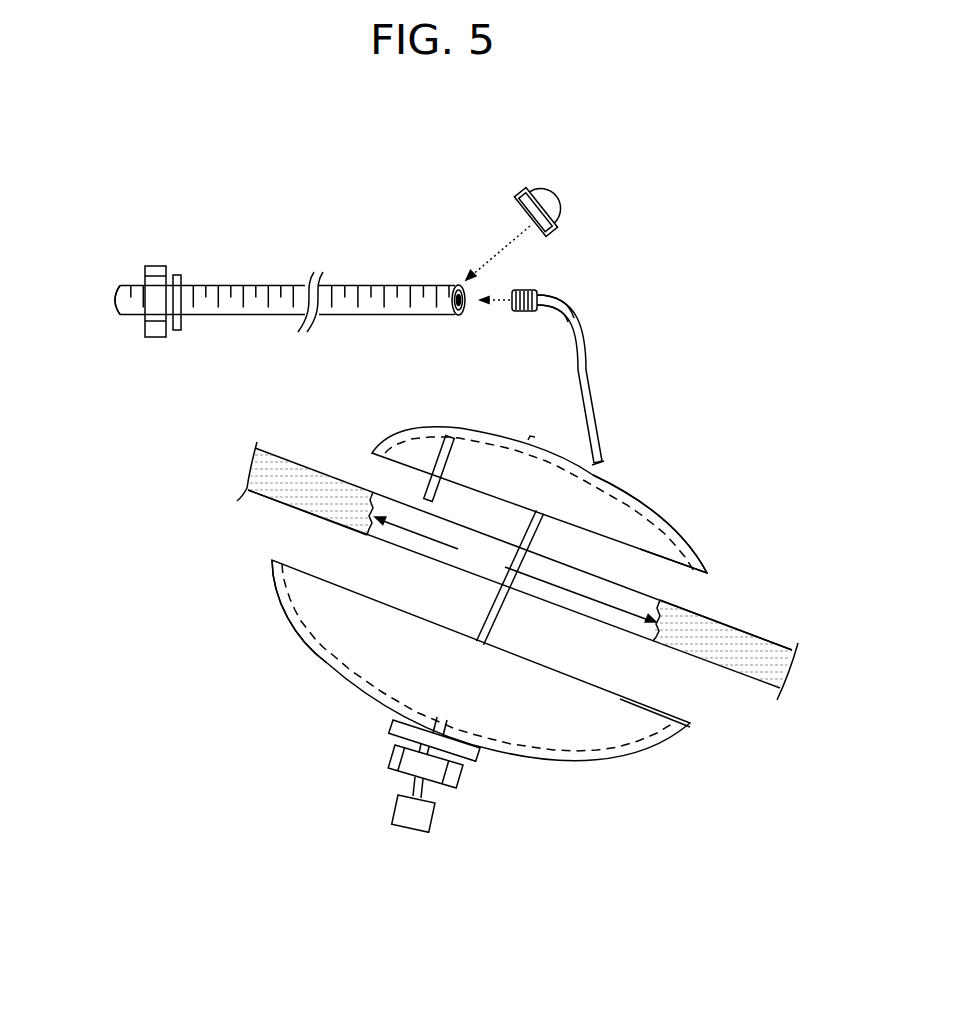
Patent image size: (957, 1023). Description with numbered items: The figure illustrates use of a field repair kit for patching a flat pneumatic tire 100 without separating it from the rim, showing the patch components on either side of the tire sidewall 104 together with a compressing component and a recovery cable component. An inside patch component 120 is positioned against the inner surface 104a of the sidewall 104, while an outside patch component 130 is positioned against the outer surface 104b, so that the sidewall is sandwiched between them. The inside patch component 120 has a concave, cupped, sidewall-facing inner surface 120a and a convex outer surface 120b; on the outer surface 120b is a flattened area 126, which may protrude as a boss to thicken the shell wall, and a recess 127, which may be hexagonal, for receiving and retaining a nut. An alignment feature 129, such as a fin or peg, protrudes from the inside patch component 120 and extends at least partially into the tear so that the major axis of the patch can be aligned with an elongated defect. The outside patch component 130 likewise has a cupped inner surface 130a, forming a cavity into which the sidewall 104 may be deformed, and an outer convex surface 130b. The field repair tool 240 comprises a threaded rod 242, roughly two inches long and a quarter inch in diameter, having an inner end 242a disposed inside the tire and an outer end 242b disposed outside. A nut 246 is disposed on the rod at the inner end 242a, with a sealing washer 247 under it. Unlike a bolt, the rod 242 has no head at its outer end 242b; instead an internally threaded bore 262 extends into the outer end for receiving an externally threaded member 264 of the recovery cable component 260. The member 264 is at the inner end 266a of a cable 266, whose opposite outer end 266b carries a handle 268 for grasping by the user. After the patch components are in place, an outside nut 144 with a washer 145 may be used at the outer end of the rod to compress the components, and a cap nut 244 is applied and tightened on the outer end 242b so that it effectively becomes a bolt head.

The pneumatic tire 100 is at (238, 464).
The sidewall 104 is at (306, 452).
The inner surface of tire sidewall 104a is at (756, 640).
The outer surface of tire sidewall 104b is at (281, 505).
The inside patch component 120 is at (665, 485).
The inner surface of inside patch component 120a is at (703, 576).
The outer surface of inside patch component 120b is at (692, 515).
The flattened area 126 is at (600, 463).
The recess 127 is at (597, 462).
The alignment feature 129 is at (430, 497).
The outside patch component 130 is at (659, 765).
The inner surface of outside patch component 130a is at (684, 727).
The outer surface of outside patch component 130b is at (295, 631).
The outside nut 144 is at (390, 758).
The washer 145 is at (392, 724).
The field repair tool 240 is at (165, 162).
The threaded rod 242 is at (212, 286).
The inner end of threaded rod 242a is at (113, 298).
The outer end of threaded rod 242b is at (463, 308).
The cap nut 244 is at (560, 230).
The nut 246 is at (155, 266).
The sealing washer 247 is at (178, 331).
The recovery cable component 260 is at (617, 373).
The internally-threaded bore 262 is at (470, 304).
The externally-threaded member 264 is at (532, 290).
The cable 266 is at (586, 334).
The inner end of cable 266a is at (545, 310).
The outer end of cable 266b is at (425, 795).
The handle 268 is at (417, 833).